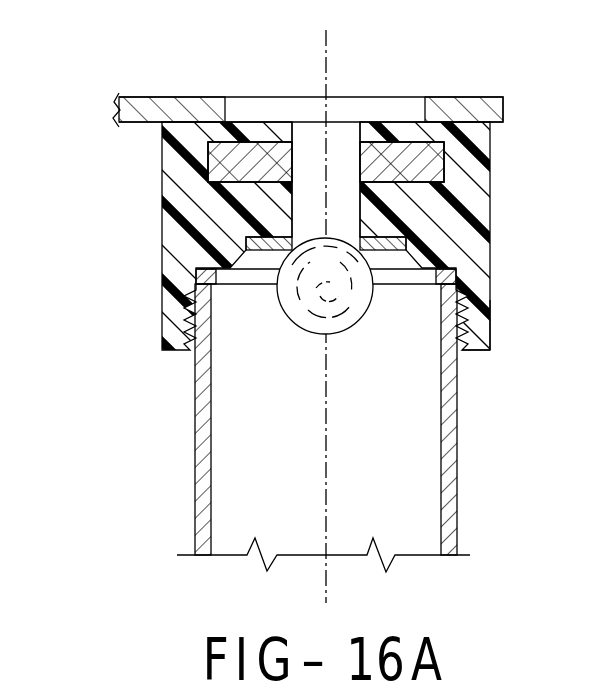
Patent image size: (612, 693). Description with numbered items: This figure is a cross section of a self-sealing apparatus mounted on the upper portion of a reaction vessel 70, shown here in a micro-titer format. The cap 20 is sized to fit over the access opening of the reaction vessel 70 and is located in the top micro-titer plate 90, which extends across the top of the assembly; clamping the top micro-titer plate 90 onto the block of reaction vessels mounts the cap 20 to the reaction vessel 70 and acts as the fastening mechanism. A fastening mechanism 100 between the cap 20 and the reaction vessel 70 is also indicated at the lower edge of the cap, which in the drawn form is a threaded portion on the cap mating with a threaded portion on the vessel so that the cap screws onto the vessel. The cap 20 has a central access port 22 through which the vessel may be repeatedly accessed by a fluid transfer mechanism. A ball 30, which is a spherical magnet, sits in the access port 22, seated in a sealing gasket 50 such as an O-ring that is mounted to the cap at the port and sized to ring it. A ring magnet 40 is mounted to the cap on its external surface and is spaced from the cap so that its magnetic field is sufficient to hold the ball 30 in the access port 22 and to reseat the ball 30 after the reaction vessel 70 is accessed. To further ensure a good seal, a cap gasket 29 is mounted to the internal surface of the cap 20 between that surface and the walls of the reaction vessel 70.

The cap 20 is at (156, 199).
The access port 22 is at (300, 200).
The cap gasket 29 is at (428, 286).
The ball 30 is at (305, 304).
The ring magnet 40 is at (446, 152).
The sealing gasket 50 is at (258, 248).
The reaction vessel 70 is at (196, 429).
The top micro-titer plate 90 is at (173, 97).
The fastening mechanism 100 is at (474, 368).